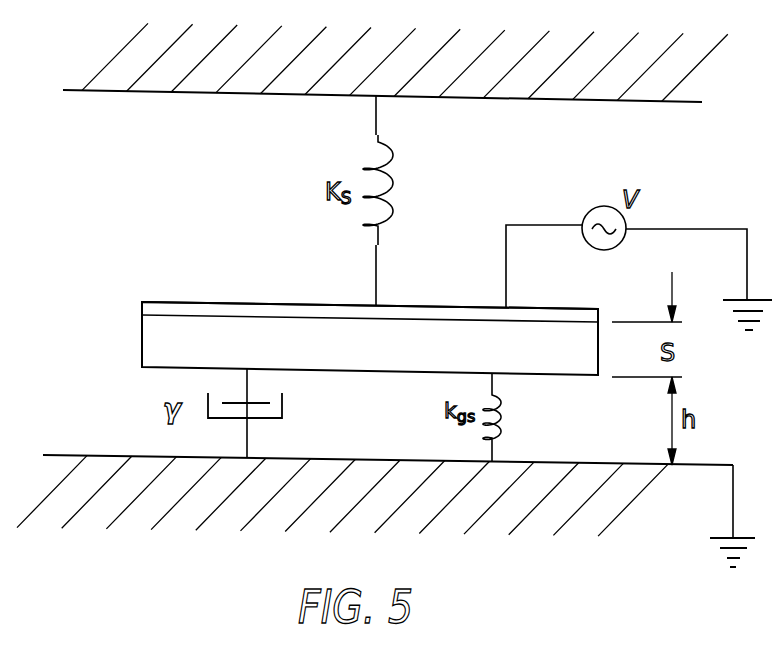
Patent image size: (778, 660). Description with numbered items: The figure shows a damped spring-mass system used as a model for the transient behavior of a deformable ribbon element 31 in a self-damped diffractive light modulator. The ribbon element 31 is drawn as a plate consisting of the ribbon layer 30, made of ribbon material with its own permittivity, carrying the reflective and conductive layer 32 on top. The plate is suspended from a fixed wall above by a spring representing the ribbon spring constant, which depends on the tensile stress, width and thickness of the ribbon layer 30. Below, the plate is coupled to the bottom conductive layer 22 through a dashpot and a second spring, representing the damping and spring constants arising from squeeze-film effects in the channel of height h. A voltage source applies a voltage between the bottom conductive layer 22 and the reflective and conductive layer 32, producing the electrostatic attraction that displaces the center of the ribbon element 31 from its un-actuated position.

The bottom conductive layer 22 is at (52, 455).
The ribbon layer 30 is at (142, 340).
The deformable ribbon element 31 is at (232, 290).
The reflective and conductive layer 32 is at (167, 302).